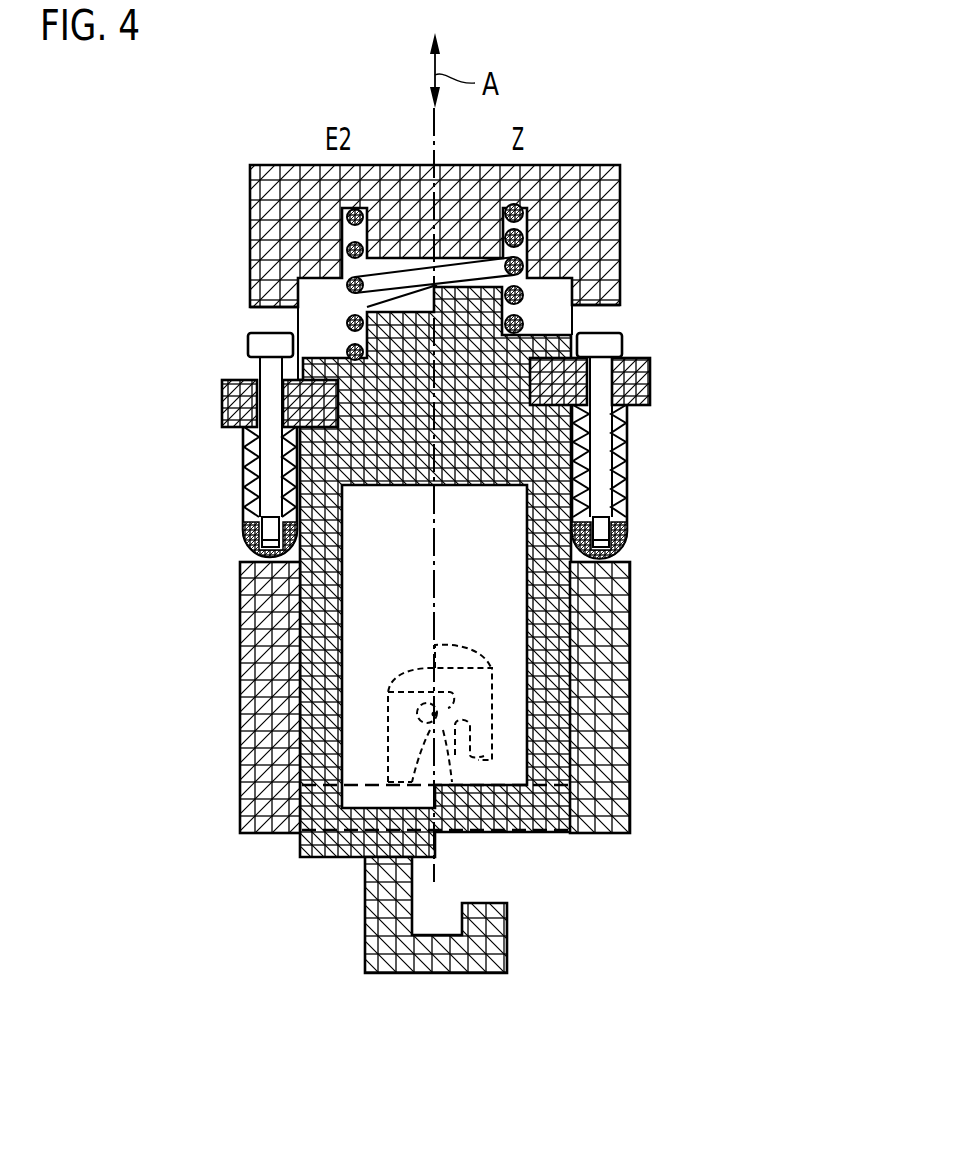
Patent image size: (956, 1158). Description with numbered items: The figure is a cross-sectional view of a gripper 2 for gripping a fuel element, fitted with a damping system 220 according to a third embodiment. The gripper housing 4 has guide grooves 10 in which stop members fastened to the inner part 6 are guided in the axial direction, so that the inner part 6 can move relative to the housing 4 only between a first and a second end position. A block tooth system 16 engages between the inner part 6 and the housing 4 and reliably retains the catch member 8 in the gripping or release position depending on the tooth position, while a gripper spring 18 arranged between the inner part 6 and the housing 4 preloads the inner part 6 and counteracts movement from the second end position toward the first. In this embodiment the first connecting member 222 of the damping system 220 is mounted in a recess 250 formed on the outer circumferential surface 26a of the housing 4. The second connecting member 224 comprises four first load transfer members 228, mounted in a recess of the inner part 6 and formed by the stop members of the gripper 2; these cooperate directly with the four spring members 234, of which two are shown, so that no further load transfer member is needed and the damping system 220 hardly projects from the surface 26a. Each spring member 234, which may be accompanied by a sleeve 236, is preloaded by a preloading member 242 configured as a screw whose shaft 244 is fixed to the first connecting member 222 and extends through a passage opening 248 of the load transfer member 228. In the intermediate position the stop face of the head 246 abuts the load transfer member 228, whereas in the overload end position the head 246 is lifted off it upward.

The gripper 2 is at (775, 187).
The gripper housing 4 is at (608, 204).
The inner part of gripper 6 is at (553, 702).
The catch member 8 is at (376, 925).
The guide groove 10 is at (250, 318).
The block tooth system 16 is at (468, 683).
The gripper spring 18 is at (518, 240).
The damping system 220 is at (196, 380).
The first connecting member 222 is at (248, 541).
The second connecting member 224 is at (436, 395).
The first load transfer member 228 is at (232, 395).
The spring member 234 is at (242, 463).
The sleeve 236 is at (242, 475).
The preloading member 242 is at (431, 430).
The screw shaft 244 is at (266, 533).
The screw head 246 is at (250, 345).
The passage opening 248 is at (292, 398).
The recess in housing 250 is at (434, 696).
The outer circumferential surface of housing 26a is at (240, 561).